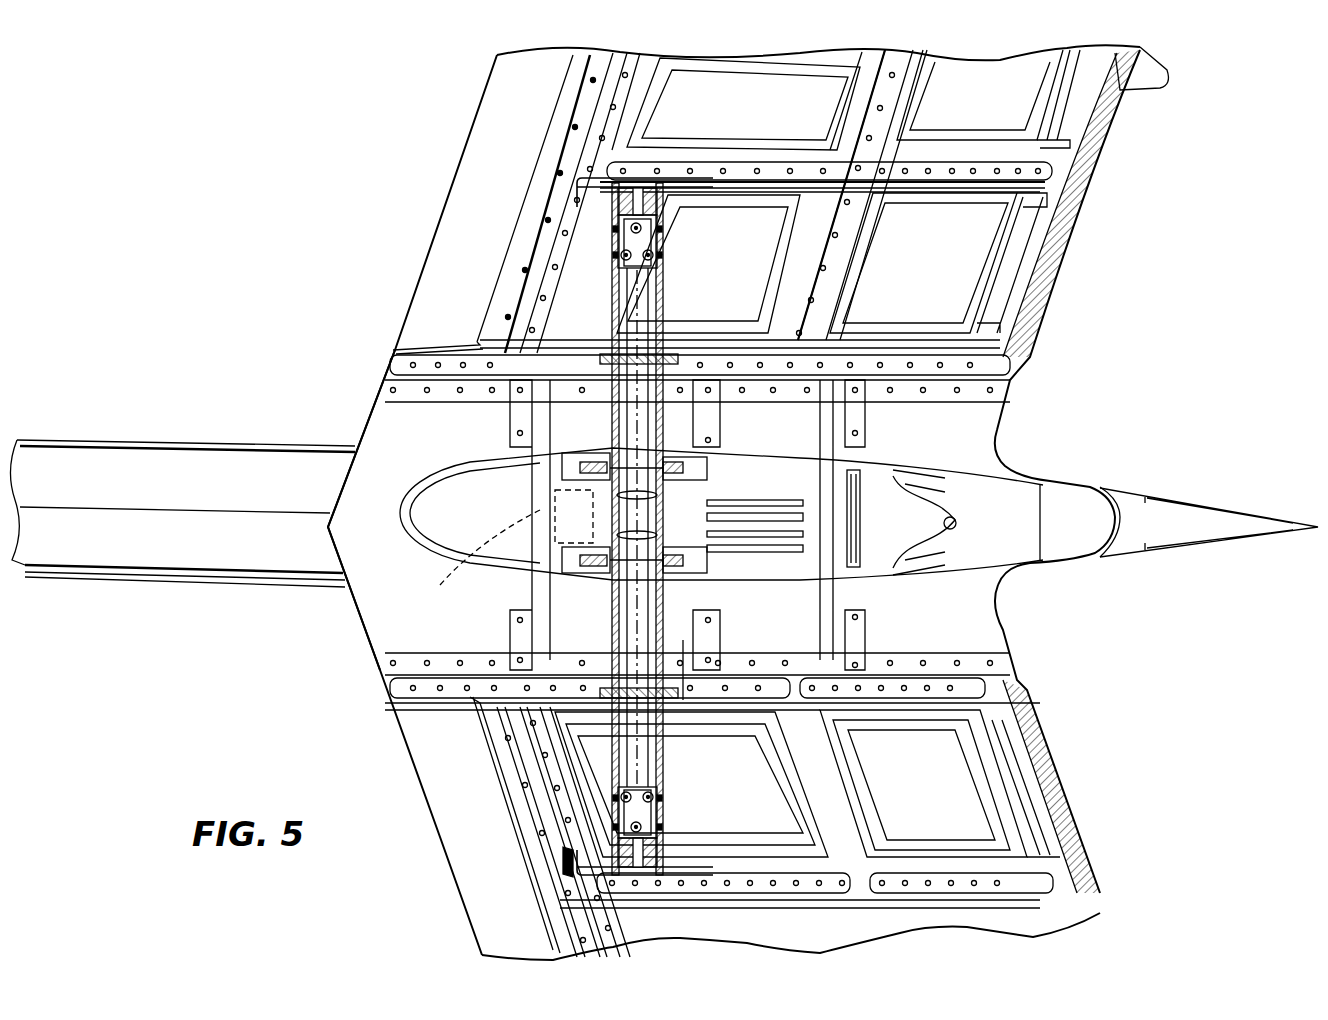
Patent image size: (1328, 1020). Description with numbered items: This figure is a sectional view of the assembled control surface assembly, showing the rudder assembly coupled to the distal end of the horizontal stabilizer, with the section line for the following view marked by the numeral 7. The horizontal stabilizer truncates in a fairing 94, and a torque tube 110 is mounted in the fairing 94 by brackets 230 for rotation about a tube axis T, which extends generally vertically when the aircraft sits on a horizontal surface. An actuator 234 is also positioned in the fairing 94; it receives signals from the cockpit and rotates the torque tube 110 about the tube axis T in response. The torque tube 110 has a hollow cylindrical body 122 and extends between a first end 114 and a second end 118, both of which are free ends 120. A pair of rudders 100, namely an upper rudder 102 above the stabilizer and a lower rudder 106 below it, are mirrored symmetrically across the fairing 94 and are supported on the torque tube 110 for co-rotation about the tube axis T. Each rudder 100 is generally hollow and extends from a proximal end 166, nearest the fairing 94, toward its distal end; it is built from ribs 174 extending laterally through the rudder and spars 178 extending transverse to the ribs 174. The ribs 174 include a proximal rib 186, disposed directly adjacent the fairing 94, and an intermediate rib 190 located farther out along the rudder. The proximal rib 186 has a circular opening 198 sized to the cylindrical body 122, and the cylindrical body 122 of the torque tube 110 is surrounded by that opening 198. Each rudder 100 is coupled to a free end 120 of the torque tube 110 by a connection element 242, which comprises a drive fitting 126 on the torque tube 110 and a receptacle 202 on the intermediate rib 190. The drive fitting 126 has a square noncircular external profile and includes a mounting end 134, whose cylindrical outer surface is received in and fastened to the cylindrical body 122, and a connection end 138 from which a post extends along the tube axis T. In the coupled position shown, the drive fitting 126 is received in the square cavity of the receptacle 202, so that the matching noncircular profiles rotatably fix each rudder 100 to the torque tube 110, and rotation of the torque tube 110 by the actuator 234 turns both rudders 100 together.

The fairing 94 is at (365, 456).
The rudders 100 is at (460, 186).
The upper rudder 102 is at (477, 133).
The lower rudder 106 is at (455, 846).
The torque tube 110 is at (612, 418).
The first end 114 is at (652, 222).
The second end 118 is at (655, 828).
The free ends 120 is at (612, 232).
The cylindrical body 122 is at (560, 632).
The drive fitting 126 is at (640, 262).
The mounting end 134 is at (655, 240).
The connection end 138 is at (658, 192).
The proximal end 166 is at (1005, 680).
The ribs 174 is at (890, 690).
The spars 178 is at (830, 808).
The proximal rib 186 is at (735, 692).
The intermediate rib 190 is at (745, 885).
The opening 198 is at (683, 700).
The receptacle 202 is at (628, 886).
The brackets 230 is at (705, 465).
The actuator 234 is at (498, 548).
The connection element 242 is at (634, 166).
The section line 7- 7 is at (598, 200).
The tube axis T is at (632, 620).